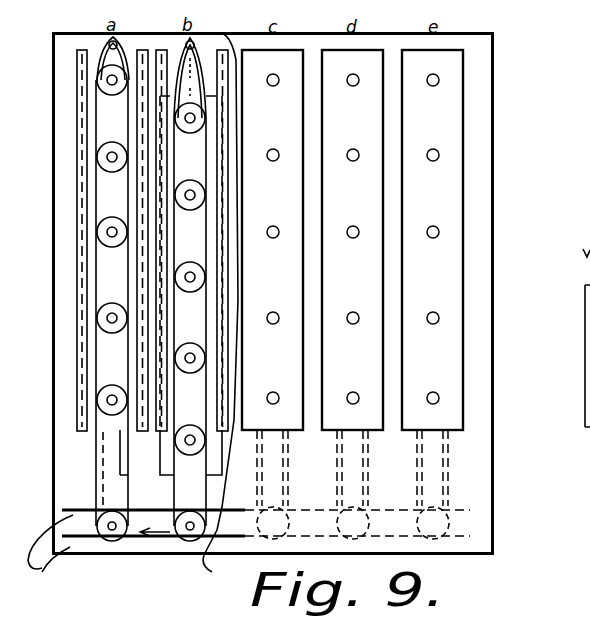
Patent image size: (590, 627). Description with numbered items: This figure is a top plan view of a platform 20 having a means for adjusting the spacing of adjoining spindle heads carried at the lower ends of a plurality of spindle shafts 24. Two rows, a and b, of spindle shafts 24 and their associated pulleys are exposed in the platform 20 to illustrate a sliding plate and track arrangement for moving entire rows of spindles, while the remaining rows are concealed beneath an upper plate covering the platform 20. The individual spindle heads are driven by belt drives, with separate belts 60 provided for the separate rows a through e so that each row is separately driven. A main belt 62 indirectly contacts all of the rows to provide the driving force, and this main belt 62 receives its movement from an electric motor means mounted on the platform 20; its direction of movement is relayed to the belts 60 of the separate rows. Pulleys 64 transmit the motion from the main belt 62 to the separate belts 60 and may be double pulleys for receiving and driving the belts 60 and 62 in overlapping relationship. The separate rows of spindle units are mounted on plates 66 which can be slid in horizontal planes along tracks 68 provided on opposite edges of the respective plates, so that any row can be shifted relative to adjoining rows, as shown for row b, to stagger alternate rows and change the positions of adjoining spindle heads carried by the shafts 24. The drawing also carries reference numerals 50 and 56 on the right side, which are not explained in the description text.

The platform 20 is at (500, 122).
The spindle shafts 24 is at (110, 81).
The panels 50 is at (483, 209).
The bracket 56 is at (586, 372).
The separate belts 60 is at (96, 447).
The main belt 62 is at (134, 309).
The pulleys 64 is at (106, 512).
The plates 66 is at (123, 53).
The tracks 68 is at (83, 58).